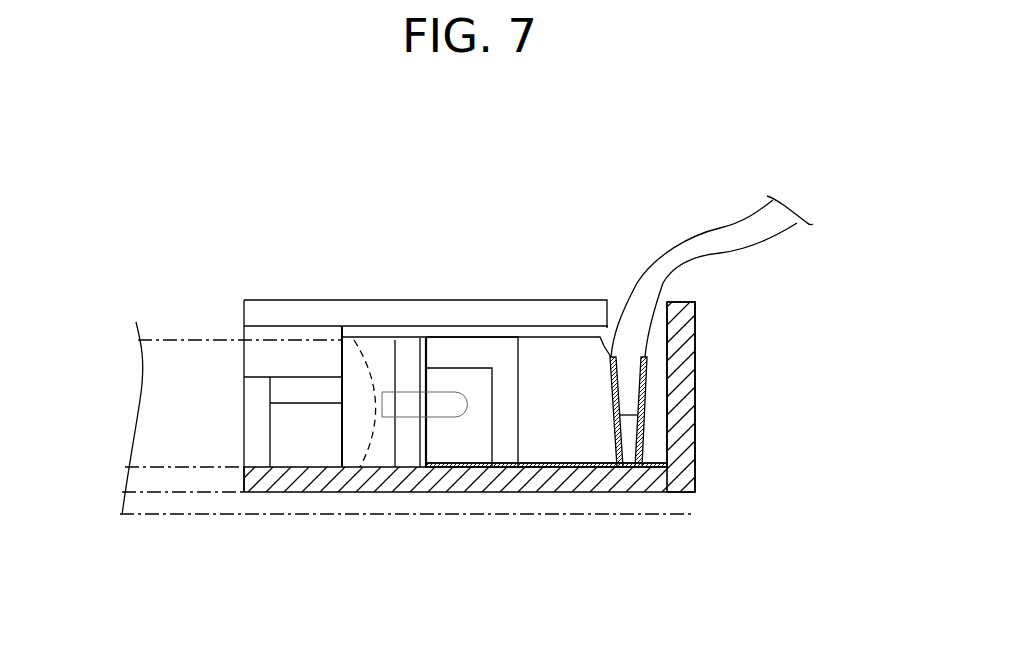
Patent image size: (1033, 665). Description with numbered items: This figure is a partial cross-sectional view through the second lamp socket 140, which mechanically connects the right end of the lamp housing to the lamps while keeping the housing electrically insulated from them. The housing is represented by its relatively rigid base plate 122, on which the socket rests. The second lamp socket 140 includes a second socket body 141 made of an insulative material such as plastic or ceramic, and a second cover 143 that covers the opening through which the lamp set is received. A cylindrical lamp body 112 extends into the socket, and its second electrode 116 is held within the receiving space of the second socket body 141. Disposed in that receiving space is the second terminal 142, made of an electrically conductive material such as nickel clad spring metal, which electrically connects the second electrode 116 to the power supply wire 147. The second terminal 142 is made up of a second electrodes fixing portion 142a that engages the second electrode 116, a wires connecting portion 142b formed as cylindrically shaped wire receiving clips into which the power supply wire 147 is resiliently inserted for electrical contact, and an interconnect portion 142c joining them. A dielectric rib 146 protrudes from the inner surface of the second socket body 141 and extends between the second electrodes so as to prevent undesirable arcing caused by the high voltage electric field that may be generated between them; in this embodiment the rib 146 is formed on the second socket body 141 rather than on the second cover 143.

The cylindrical lamp body 112 is at (186, 338).
The second cover 143 is at (302, 300).
The second electrode 116 is at (409, 392).
The second terminal 142 is at (663, 203).
The second electrodes fixing portion 142a is at (480, 375).
The interconnect portion 142c is at (563, 467).
The wires connecting portion 142b is at (607, 315).
The power supply wire 147 is at (728, 242).
The second lamp socket 140 is at (703, 333).
The second socket body 141 is at (688, 392).
The base plate 122 is at (422, 515).
The dielectric rib 146 is at (500, 455).